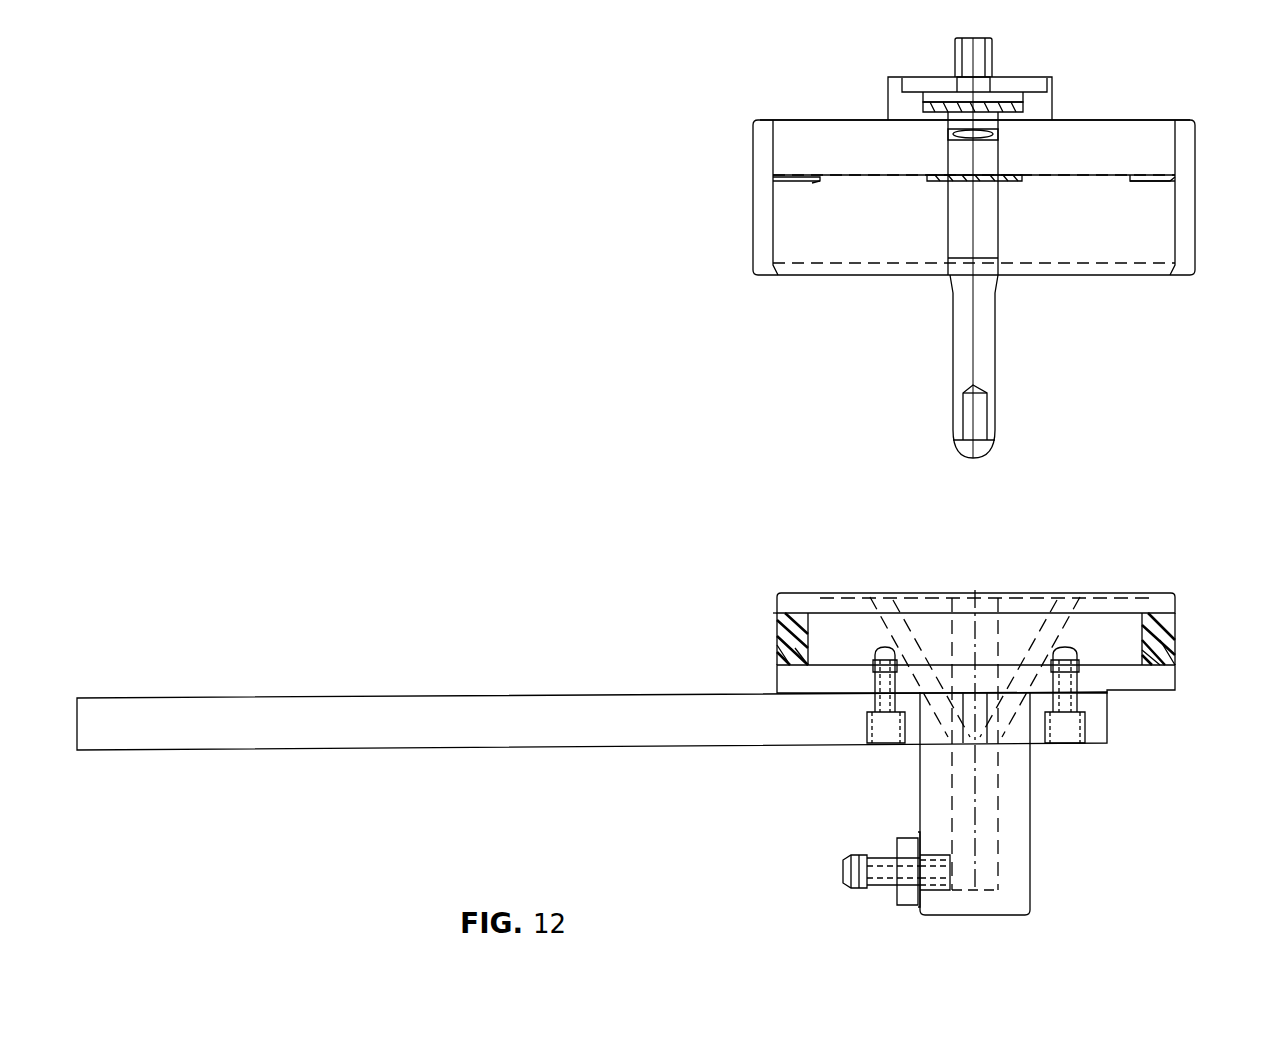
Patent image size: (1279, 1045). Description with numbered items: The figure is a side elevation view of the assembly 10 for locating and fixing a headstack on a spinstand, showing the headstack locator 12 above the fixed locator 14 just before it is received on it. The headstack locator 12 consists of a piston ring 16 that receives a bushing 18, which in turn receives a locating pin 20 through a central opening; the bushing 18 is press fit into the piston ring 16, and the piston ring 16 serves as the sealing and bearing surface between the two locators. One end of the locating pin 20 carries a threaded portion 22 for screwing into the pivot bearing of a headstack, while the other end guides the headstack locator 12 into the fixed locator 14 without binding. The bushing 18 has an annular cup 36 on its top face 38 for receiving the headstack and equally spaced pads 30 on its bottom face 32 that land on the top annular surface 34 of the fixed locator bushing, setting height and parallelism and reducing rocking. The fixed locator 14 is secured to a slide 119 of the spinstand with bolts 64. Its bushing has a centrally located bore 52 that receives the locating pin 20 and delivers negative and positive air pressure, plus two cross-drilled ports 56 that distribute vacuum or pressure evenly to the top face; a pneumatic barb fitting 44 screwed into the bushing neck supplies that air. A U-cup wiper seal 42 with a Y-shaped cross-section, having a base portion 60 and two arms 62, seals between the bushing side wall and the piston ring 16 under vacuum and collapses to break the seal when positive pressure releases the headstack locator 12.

The assembly 10 is at (548, 248).
The headstack locator 12 is at (735, 175).
The fixed locator 14 is at (1150, 565).
The piston ring 16 is at (1192, 232).
The bushing 18 is at (1128, 133).
The locating pin 20 is at (1000, 330).
The threaded portion 22 is at (992, 56).
The pads 30 is at (795, 182).
The bottom face 32 is at (1070, 178).
The top annular surface 34 is at (792, 593).
The annular cup 36 is at (910, 88).
The top face 38 is at (820, 122).
The wiper seal 42 is at (1176, 620).
The pneumatic barb fitting 44 is at (882, 886).
The central bore 52 is at (996, 603).
The ports 56 is at (875, 597).
The base portion 60 is at (1180, 638).
The arms 62 is at (1172, 660).
The bolts 64 is at (880, 742).
The slide 119 is at (374, 698).